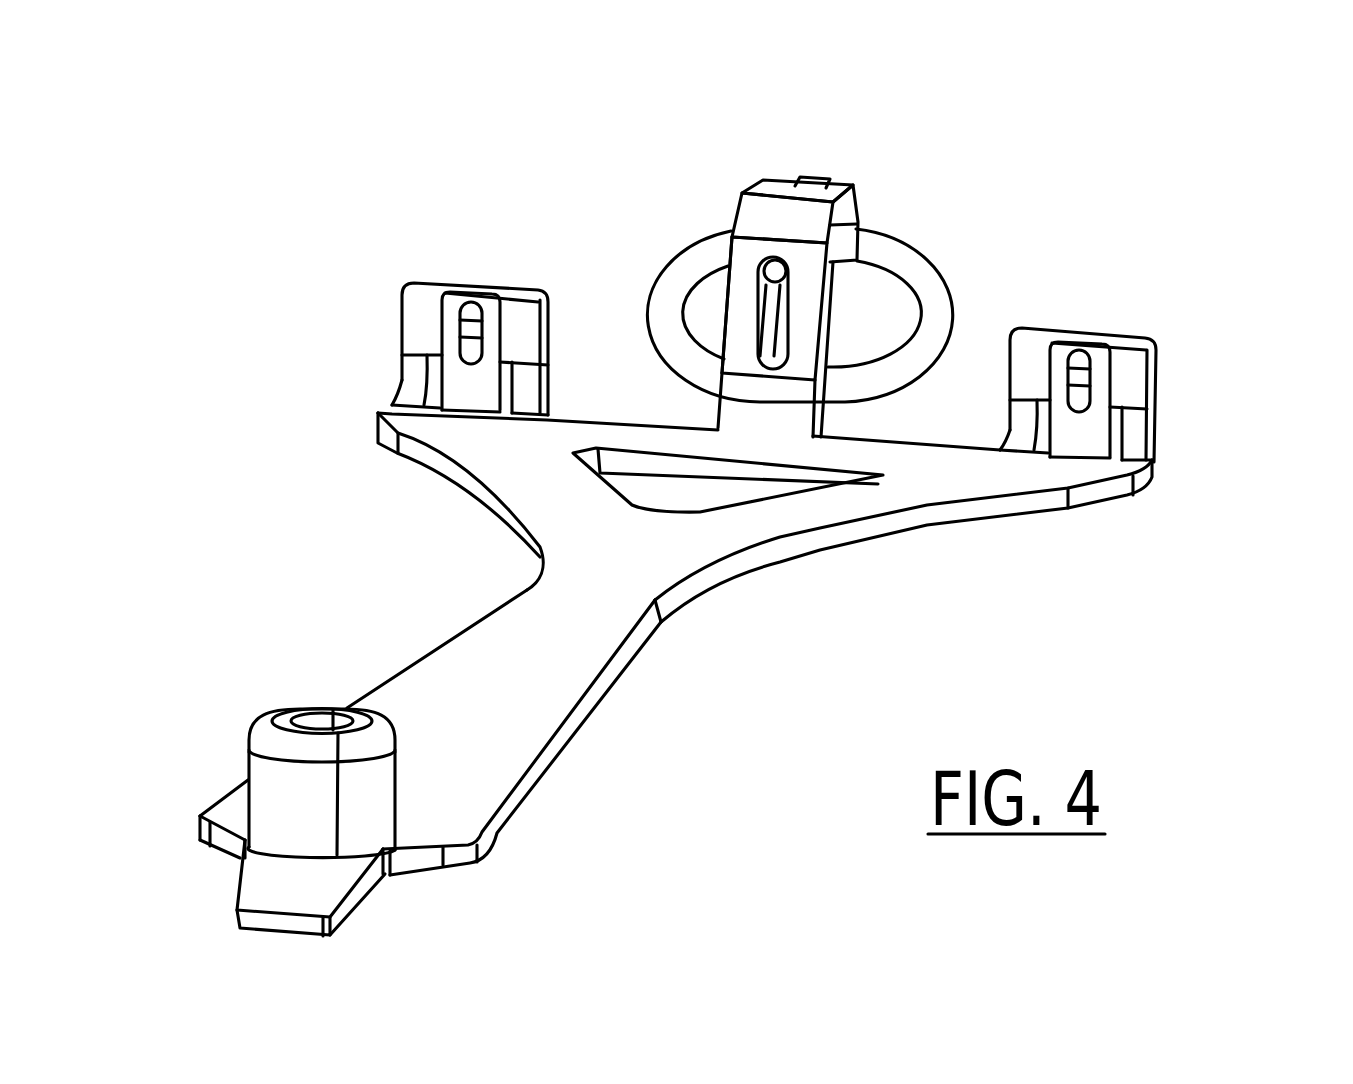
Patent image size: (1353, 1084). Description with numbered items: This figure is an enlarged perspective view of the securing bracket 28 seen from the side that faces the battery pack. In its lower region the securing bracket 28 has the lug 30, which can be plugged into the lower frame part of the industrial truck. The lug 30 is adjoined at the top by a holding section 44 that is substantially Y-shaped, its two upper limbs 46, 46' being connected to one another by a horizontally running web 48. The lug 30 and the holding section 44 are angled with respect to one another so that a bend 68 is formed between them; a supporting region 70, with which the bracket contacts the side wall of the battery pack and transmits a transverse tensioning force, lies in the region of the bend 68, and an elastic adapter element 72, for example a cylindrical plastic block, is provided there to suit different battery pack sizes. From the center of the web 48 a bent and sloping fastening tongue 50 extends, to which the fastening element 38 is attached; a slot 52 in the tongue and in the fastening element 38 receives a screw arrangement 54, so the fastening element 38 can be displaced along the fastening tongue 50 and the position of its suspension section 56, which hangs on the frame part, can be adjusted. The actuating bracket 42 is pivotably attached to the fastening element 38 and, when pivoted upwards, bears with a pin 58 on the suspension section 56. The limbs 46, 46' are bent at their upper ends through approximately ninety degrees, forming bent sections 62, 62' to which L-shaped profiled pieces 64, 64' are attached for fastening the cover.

The securing bracket 28 is at (692, 739).
The lug 30 is at (290, 892).
The fastening element 38 is at (743, 260).
The actuating bracket 42 is at (890, 255).
The holding section 44 is at (500, 650).
The limb 46 is at (903, 541).
The limb 46' is at (460, 501).
The web 48 is at (768, 452).
The fastening tongue 50 is at (743, 408).
The slot 52 is at (727, 318).
The screw arrangement 54 is at (778, 282).
The suspension section 56 is at (778, 195).
The pin 58 is at (818, 172).
The bent section 62 is at (1128, 395).
The bent section 62' is at (416, 349).
The L-shaped profiled piece 64 is at (1138, 464).
The L-shaped profiled piece 64' is at (419, 412).
The bend 68 is at (390, 877).
The supporting region 70 is at (427, 722).
The adapter element 72 is at (268, 760).